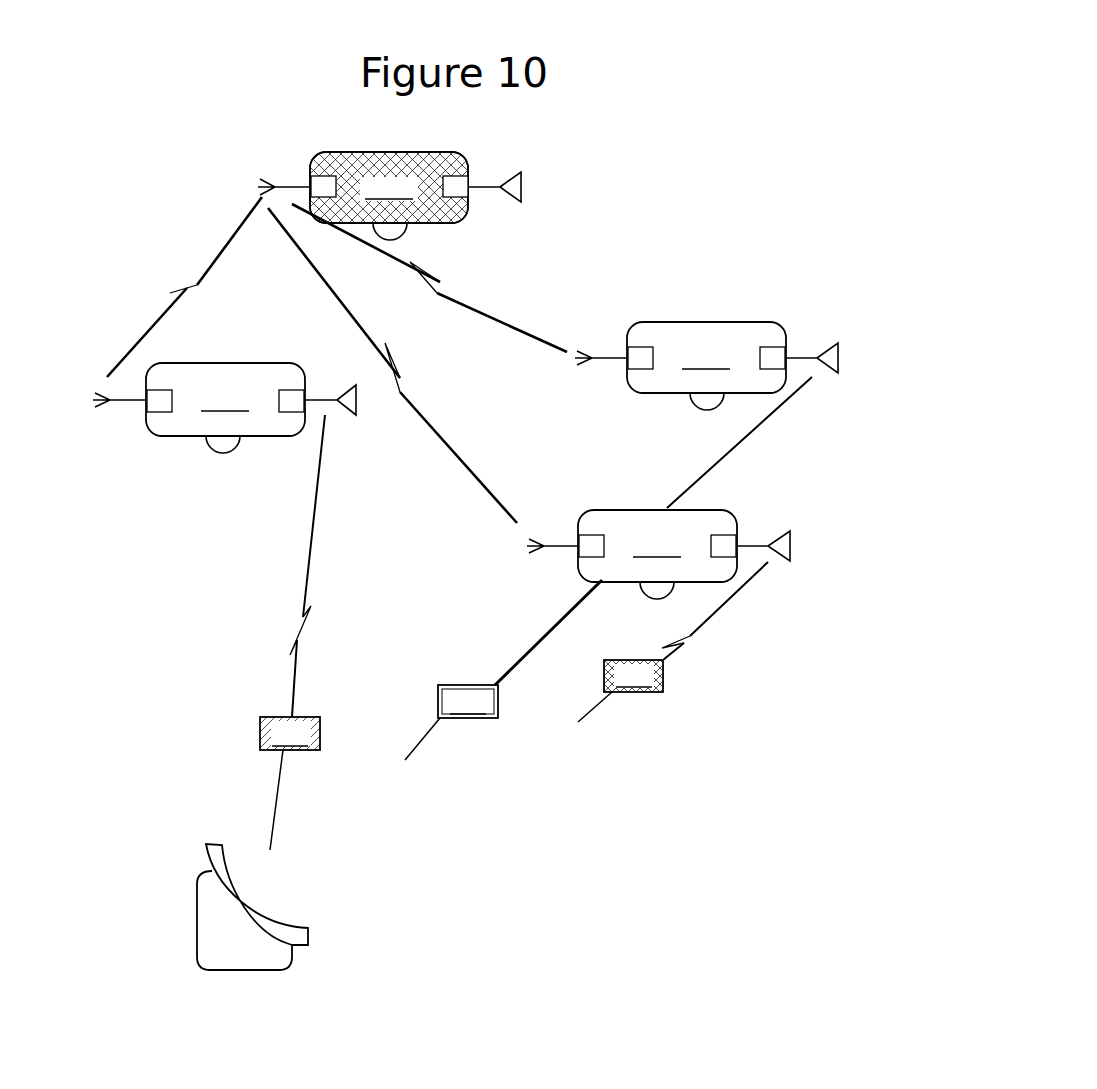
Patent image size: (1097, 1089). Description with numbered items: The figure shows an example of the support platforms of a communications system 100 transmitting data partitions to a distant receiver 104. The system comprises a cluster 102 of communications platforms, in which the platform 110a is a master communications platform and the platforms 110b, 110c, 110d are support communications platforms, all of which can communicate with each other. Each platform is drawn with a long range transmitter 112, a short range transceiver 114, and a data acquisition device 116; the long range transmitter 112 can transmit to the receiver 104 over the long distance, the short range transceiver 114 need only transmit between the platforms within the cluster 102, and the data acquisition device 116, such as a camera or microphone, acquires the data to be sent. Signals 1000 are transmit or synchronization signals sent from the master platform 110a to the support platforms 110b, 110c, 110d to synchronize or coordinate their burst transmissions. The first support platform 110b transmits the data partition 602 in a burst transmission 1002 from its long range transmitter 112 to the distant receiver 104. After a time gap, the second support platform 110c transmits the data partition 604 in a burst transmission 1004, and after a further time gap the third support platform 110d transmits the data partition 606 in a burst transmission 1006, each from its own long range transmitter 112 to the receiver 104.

The communications system 100 is at (724, 153).
The cluster 102 is at (631, 264).
The distant receiver 104 is at (197, 910).
The master communications platform 110a is at (389, 187).
The first support communications platform 110b is at (225, 399).
The second support communications platform 110c is at (706, 357).
The third support communications platform 110d is at (657, 546).
The long range transmitter 112 is at (490, 200).
The short range transceiver 114 is at (289, 166).
The data acquisition device 116 is at (406, 236).
The data partition 602 is at (290, 733).
The data partition 604 is at (503, 670).
The data partition 606 is at (633, 676).
The signals 1000 is at (206, 258).
The burst transmission 1002 is at (301, 565).
The burst transmission 1004 is at (759, 428).
The burst transmission 1006 is at (733, 600).